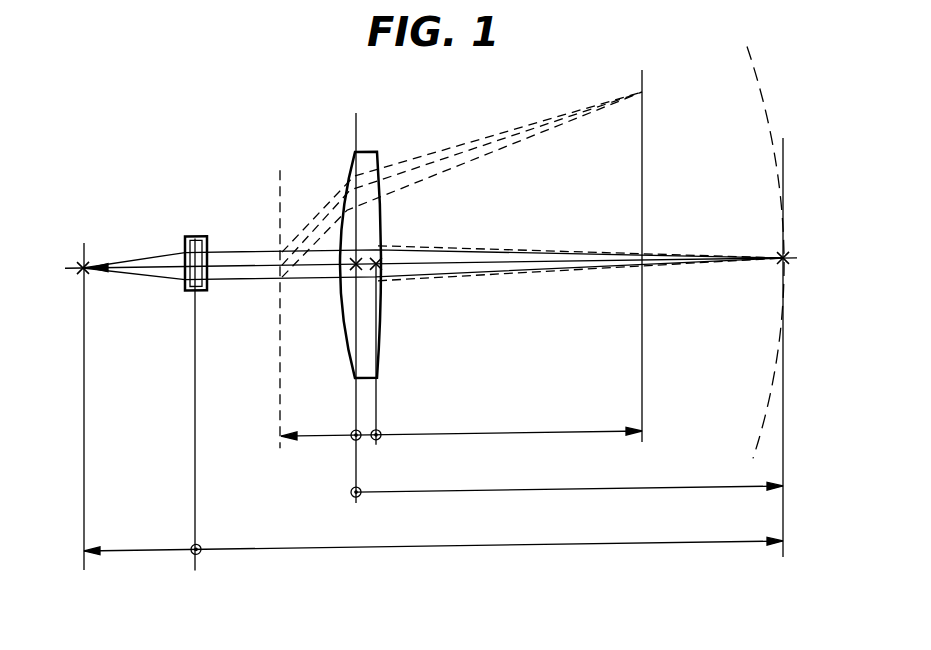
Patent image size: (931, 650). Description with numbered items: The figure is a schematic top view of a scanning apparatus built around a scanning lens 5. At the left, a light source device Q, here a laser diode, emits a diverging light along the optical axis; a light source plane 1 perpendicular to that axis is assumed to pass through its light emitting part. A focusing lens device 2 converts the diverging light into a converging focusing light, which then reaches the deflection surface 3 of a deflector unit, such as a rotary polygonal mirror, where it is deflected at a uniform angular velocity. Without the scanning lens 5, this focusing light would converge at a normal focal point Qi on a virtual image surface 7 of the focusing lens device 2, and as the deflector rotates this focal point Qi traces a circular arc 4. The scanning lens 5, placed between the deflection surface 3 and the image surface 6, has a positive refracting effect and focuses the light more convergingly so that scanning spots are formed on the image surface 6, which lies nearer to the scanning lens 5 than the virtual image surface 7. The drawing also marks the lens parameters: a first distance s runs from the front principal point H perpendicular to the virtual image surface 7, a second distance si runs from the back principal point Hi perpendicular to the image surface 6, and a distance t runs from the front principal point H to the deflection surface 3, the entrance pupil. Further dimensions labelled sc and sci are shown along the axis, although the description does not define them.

The light source plane 1 is at (86, 412).
The focusing lens device 2 is at (191, 293).
The deflection surface 3 is at (283, 216).
The circular arc 4 is at (770, 121).
The scanning lens 5 is at (365, 154).
The image surface 6 is at (643, 106).
The virtual image surface 7 is at (786, 427).
The light source device Q is at (80, 270).
The normal focal point Qi is at (787, 268).
The front principal point H is at (354, 270).
The back principal point Hi is at (378, 270).
The distance t is at (322, 440).
The second distance si is at (525, 440).
The first distance s is at (527, 497).
The distance sc is at (142, 552).
The distance sci is at (532, 552).